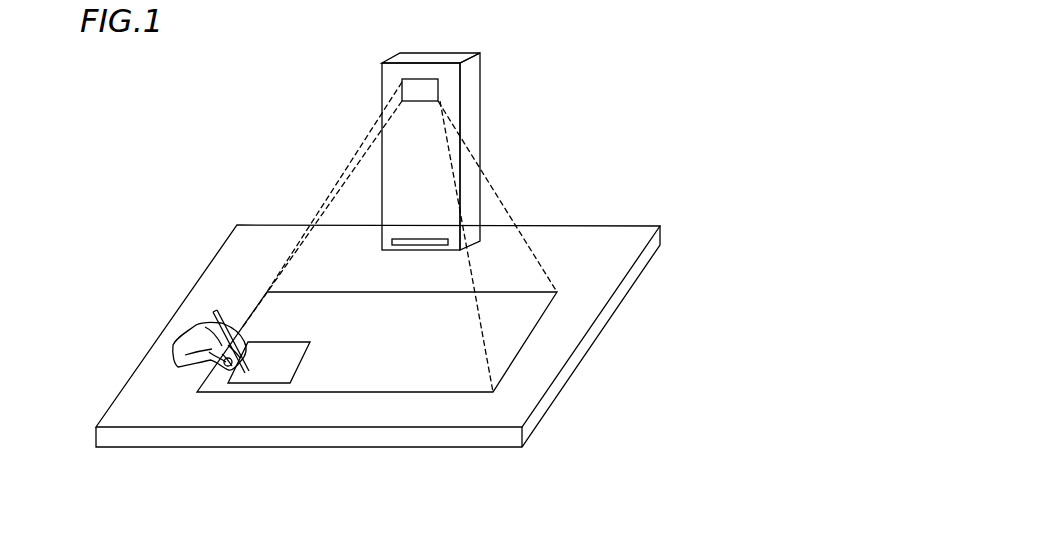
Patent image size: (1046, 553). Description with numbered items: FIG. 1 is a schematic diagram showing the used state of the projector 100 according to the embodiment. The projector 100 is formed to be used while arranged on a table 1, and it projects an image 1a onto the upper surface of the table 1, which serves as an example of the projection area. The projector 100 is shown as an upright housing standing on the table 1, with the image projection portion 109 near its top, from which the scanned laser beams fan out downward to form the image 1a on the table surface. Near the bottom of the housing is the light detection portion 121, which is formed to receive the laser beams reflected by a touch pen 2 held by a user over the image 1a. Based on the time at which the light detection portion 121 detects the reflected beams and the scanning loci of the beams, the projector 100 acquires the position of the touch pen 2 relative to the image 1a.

The table 1 is at (393, 336).
The image 1a is at (512, 332).
The touch pen 2 is at (222, 314).
The projector 100 is at (427, 222).
The image projection portion 109 is at (404, 87).
The light detection portion 121 is at (405, 247).